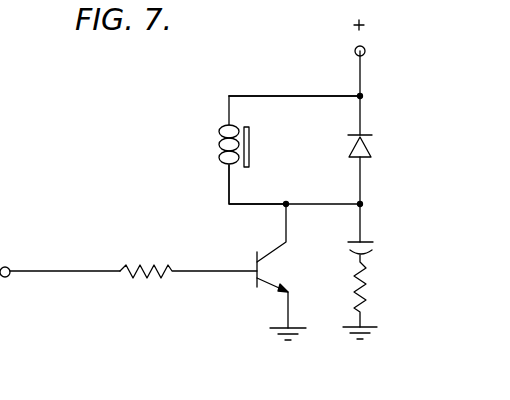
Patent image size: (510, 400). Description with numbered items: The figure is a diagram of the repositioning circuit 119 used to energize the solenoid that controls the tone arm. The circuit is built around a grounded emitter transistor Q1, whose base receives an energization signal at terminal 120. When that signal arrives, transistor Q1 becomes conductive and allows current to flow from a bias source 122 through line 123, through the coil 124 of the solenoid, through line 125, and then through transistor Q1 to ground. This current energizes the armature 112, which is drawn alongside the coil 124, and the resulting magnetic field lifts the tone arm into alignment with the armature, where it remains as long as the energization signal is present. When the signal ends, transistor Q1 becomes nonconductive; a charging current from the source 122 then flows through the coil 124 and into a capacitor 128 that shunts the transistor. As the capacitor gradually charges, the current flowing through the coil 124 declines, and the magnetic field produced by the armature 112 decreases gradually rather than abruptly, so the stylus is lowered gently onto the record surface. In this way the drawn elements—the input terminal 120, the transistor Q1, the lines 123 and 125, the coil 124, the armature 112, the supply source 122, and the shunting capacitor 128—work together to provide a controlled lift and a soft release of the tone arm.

The armature 112 is at (250, 131).
The repositioning circuit 119 is at (196, 279).
The terminal 120 is at (9, 266).
The source 122 is at (366, 50).
The line 123 is at (293, 95).
The coil 124 is at (220, 126).
The line 125 is at (247, 205).
The capacitor 128 is at (370, 238).
The grounded emitter transistor Q1 is at (264, 272).